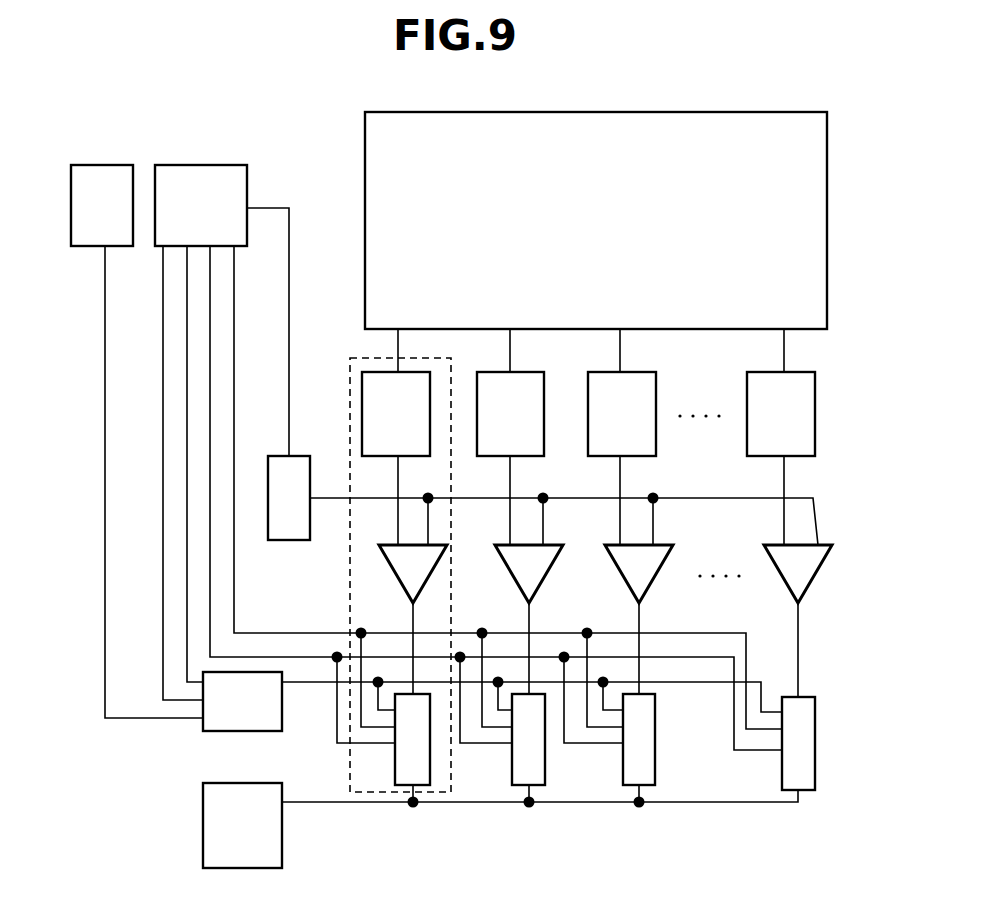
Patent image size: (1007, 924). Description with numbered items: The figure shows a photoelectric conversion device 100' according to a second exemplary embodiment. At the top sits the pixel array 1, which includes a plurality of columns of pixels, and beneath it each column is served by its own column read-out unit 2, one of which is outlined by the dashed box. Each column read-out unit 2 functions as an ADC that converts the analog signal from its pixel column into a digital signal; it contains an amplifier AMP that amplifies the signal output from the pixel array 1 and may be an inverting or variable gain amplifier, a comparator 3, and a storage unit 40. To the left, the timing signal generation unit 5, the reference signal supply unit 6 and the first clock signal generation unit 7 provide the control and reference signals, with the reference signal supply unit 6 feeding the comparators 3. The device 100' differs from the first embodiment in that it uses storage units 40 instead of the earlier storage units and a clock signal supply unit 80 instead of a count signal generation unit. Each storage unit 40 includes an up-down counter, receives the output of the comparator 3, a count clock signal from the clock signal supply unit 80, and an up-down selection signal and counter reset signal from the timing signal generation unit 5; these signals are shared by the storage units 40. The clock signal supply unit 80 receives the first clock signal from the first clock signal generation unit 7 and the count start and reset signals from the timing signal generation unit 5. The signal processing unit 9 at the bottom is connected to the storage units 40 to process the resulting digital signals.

The pixel array 1 is at (365, 210).
The column read-out unit 2 is at (371, 794).
The comparator 3 is at (386, 578).
The timing signal generation unit 5 is at (200, 165).
The reference signal supply unit 6 is at (290, 540).
The first clock signal generation unit 7 is at (105, 165).
The signal processing unit 9 is at (244, 868).
The storage unit 40 is at (803, 792).
The clock signal supply unit 80 is at (244, 731).
The photoelectric conversion device 100' is at (515, 884).
The amplifier AMP is at (375, 371).